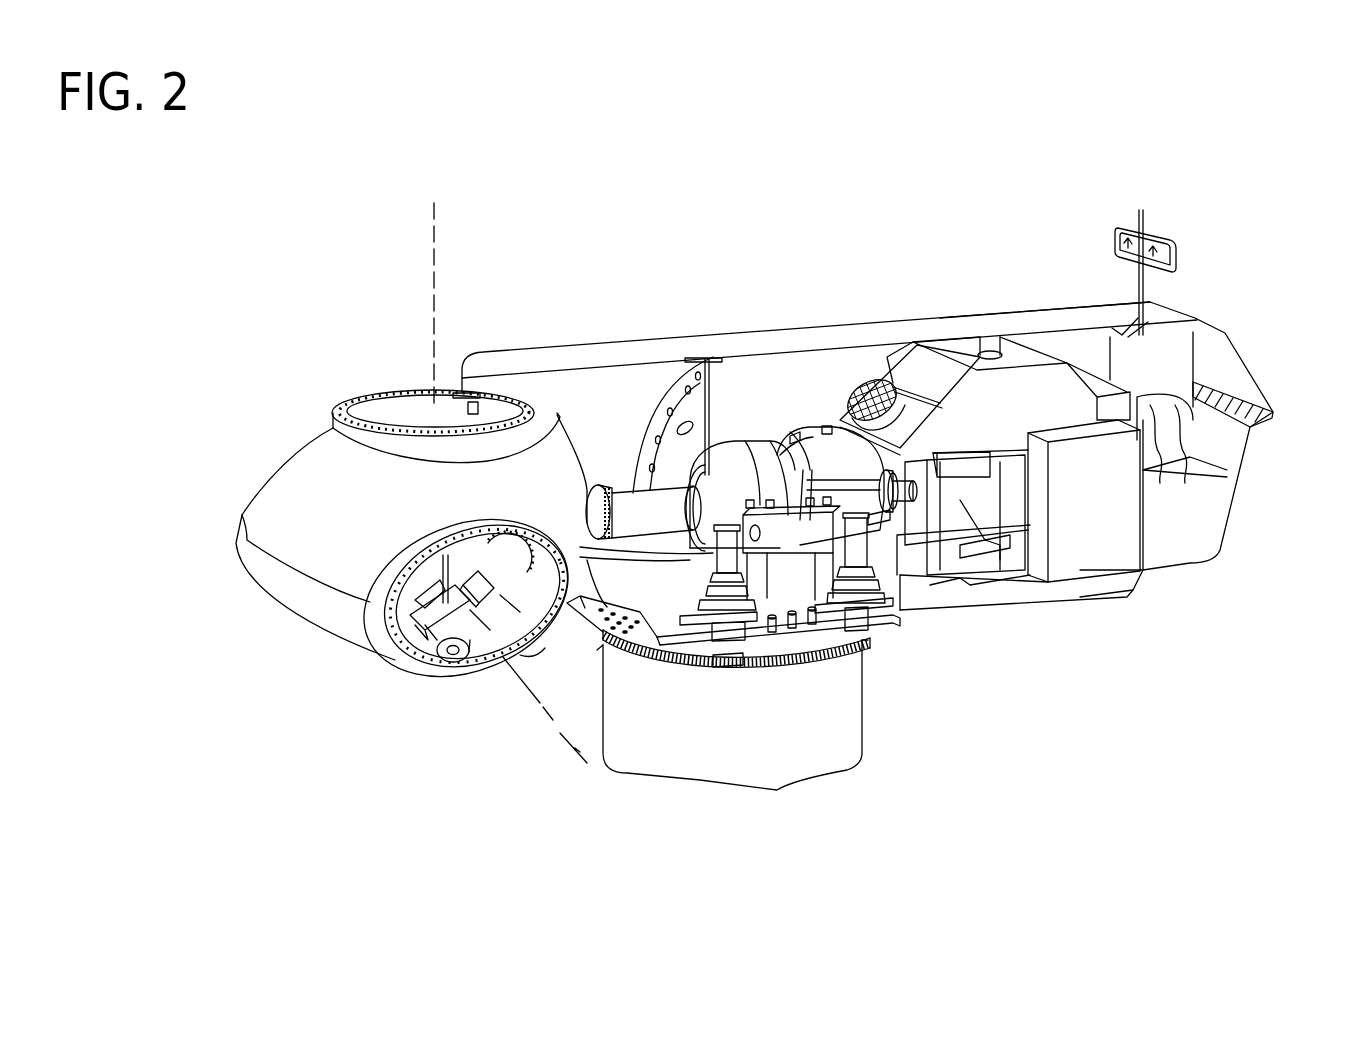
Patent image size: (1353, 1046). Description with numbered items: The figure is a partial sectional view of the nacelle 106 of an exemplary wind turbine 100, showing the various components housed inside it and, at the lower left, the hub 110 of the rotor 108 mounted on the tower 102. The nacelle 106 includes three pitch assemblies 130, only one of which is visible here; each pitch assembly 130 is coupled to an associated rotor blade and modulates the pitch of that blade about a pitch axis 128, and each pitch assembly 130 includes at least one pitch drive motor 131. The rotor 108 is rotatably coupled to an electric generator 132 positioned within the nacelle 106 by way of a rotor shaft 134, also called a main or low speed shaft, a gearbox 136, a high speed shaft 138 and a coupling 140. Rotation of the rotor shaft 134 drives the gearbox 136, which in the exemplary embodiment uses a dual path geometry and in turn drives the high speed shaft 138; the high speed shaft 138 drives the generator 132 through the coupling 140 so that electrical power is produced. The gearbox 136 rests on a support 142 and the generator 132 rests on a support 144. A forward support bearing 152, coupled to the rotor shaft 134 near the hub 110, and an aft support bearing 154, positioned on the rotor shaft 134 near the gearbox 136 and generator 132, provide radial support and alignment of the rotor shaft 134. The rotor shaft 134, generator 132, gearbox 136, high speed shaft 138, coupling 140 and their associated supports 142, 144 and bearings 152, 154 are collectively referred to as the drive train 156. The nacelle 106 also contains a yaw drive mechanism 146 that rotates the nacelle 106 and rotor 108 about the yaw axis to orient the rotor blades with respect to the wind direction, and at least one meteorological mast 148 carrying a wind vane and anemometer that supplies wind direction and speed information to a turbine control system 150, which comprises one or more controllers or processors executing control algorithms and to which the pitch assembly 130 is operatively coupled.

The wind turbine 100 is at (264, 264).
The tower 102 is at (787, 773).
The nacelle 106 is at (625, 265).
The rotor 108 is at (225, 527).
The hub 110 is at (332, 425).
The pitch axis 128 is at (434, 218).
The pitch assembly 130 is at (398, 538).
The pitch drive motor 131 is at (403, 590).
The electric generator 132 is at (960, 503).
The rotor shaft 134 is at (620, 496).
The gearbox 136 is at (838, 445).
The high speed shaft 138 is at (893, 580).
The coupling 140 is at (900, 455).
The support 142 is at (833, 600).
The support 144 is at (940, 530).
The yaw drive mechanism 146 is at (722, 625).
The meteorological mast 148 is at (1170, 247).
The turbine control system 150 is at (1123, 532).
The forward support bearing 152 is at (583, 620).
The aft support bearing 154 is at (721, 482).
The drive train 156 is at (830, 368).